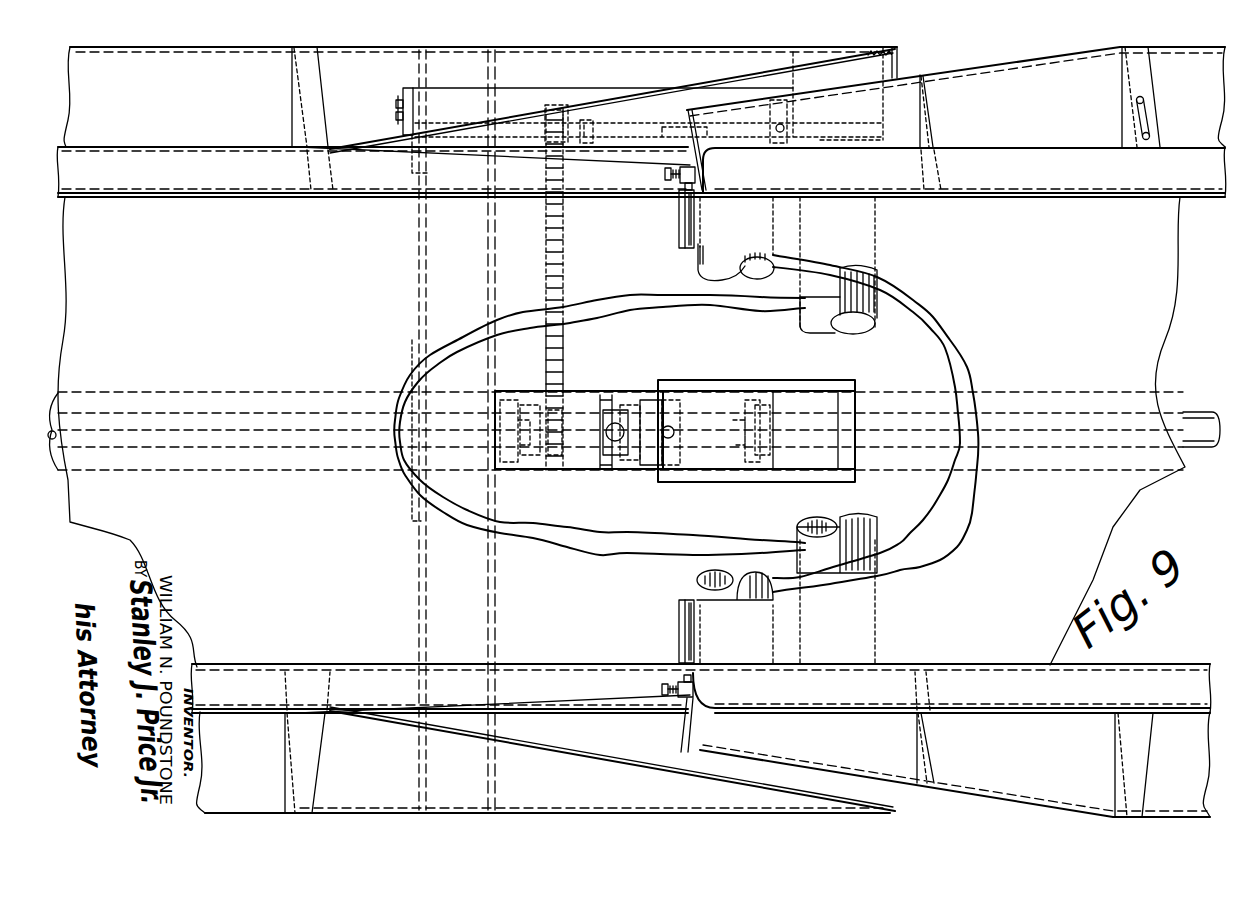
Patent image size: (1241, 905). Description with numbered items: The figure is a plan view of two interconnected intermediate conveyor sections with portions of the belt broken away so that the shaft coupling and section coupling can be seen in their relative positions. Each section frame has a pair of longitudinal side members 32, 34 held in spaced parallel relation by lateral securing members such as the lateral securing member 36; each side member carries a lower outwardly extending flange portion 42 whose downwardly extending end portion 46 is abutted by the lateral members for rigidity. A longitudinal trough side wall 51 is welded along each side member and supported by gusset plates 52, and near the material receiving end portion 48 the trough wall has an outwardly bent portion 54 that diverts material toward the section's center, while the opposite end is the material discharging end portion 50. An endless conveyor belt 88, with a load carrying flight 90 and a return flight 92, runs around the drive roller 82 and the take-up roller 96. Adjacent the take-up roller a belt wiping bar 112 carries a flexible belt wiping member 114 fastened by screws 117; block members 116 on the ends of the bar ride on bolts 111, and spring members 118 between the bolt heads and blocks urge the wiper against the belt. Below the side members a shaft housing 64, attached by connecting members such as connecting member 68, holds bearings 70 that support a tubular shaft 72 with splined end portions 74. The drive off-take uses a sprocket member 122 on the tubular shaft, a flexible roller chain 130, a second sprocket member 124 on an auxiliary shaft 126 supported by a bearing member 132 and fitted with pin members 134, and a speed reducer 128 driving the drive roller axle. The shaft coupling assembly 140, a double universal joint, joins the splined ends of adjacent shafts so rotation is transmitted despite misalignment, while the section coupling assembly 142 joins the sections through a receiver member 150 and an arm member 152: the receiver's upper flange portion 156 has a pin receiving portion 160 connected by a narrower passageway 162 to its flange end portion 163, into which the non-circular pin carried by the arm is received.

The longitudinal side member 32 is at (132, 95).
The lower outwardly extending flange portion 42 is at (195, 124).
The longitudinal side member 34 is at (247, 789).
The longitudinal trough side wall 51 is at (199, 179).
The gusset plate 52 is at (291, 100).
The downwardly extending end portion 46 is at (240, 47).
The lateral securing member 36 is at (419, 640).
The bearing member 132 is at (403, 100).
The second sprocket member 124 is at (548, 108).
The auxiliary shaft 126 is at (585, 118).
The pin member 134 is at (598, 124).
The speed reducer 128 is at (855, 50).
The outwardly bent portion 54 is at (648, 121).
The spring member 118 is at (678, 168).
The bolt 111 is at (664, 174).
The block member 116 is at (680, 196).
The screw 117 is at (686, 222).
The belt wiping bar 112 is at (686, 238).
The flexible belt wiping member 114 is at (683, 246).
The take-up roller 96 is at (706, 265).
The material discharging end portion 50 is at (757, 239).
The material receiving end portion 48 is at (642, 640).
The endless conveyor belt 88 is at (270, 276).
The load carrying flight 90 is at (294, 308).
The tubular shaft 72 is at (62, 392).
The shaft housing 64 is at (255, 470).
The connecting member 68 is at (410, 405).
The flexible roller chain 130 is at (565, 343).
The receiver member 150 is at (583, 472).
The arm member 152 is at (700, 470).
The bearing 70 is at (505, 465).
The splined end portion 74 is at (565, 462).
The sprocket member 122 is at (565, 412).
The upper flange portion 156 is at (608, 395).
The shaft coupling assembly 140 is at (640, 393).
The flange end portion 163 is at (668, 400).
The section coupling assembly 142 is at (653, 466).
The pin receiving portion 160 is at (628, 468).
The passageway 162 is at (658, 470).
The drive roller 82 is at (879, 326).
The return flight 92 is at (618, 546).